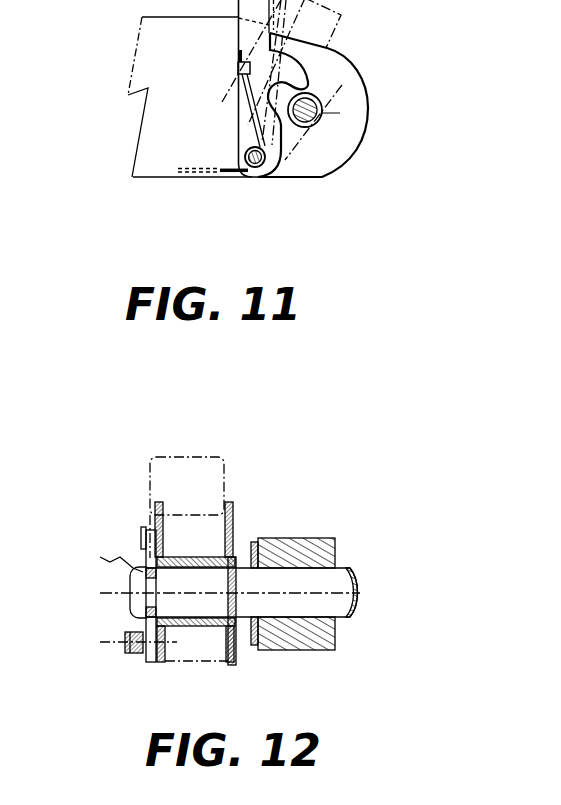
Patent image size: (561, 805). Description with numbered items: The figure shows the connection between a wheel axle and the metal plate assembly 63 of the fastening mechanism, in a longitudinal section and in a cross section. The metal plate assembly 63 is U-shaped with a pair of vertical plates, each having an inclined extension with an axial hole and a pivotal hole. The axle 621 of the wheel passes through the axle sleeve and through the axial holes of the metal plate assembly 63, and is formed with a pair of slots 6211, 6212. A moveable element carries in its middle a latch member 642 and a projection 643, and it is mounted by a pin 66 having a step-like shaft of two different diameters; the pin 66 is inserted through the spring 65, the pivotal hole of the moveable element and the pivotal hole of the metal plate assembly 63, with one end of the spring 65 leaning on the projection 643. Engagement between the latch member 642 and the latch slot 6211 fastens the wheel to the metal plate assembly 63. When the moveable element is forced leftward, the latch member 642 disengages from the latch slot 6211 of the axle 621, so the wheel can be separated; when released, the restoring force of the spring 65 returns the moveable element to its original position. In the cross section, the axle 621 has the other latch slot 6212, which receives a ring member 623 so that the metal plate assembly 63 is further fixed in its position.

In FIG. 11, the metal plate assembly 63 is at (347, 80).
In FIG. 11, the axle 621 is at (368, 113).
In FIG. 12, the axle 621 is at (140, 602).
In FIG. 12, the latch slot 6211 is at (152, 580).
In FIG. 12, the latch slot 6212 is at (235, 567).
In FIG. 12, the ring member 623 is at (237, 623).
In FIG. 11, the latch member 642 is at (330, 47).
In FIG. 11, the projection 643 is at (238, 72).
In FIG. 11, the spring 65 is at (260, 90).
In FIG. 11, the pin 66 is at (249, 176).